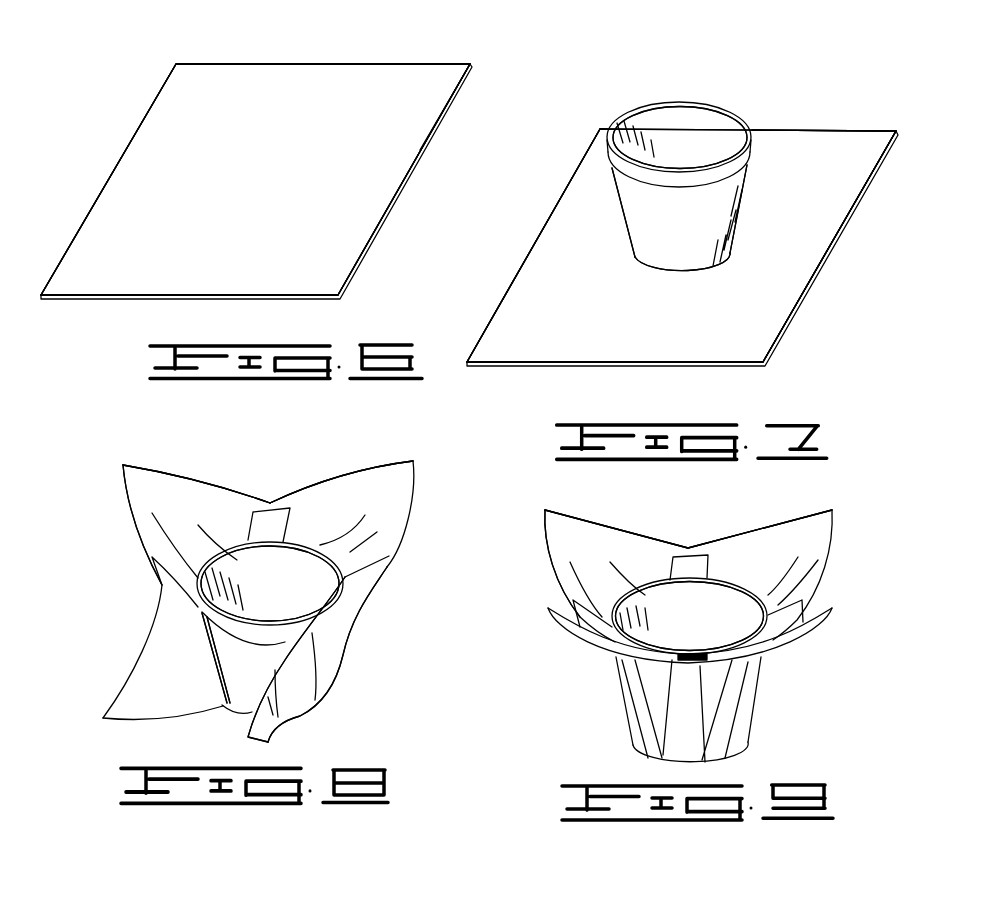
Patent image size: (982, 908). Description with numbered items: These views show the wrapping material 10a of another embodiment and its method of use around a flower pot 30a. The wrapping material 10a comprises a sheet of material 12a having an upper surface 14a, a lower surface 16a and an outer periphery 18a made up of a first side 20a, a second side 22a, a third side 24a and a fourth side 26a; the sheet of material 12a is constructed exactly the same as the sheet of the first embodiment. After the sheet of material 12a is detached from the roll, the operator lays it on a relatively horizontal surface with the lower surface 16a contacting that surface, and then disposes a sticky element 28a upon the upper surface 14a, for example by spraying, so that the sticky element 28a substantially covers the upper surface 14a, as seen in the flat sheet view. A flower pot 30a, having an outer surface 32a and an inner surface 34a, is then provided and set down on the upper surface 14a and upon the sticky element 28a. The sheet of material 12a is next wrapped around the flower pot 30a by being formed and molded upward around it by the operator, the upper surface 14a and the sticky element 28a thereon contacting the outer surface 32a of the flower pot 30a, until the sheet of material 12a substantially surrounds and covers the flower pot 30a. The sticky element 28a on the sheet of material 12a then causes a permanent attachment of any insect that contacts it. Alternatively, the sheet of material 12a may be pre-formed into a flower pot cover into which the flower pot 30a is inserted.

In FIG. 6, the flower pot cover assembly 10a is at (135, 82).
In FIG. 7, the flower pot cover assembly 10a is at (761, 99).
In FIG. 8, the flower pot cover assembly 10a is at (260, 481).
In FIG. 9, the flower pot cover assembly 10a is at (708, 523).
In FIG. 6, the sheet of material 12a is at (325, 62).
In FIG. 7, the sheet of material 12a is at (850, 128).
In FIG. 8, the sheet of material 12a is at (414, 483).
In FIG. 9, the sheet of material 12a is at (798, 513).
In FIG. 6, the upper surface 14a is at (375, 160).
In FIG. 7, the upper surface 14a is at (574, 342).
In FIG. 8, the upper surface 14a is at (158, 485).
In FIG. 9, the upper surface 14a is at (593, 532).
In FIG. 8, the lower surface 16a is at (334, 655).
In FIG. 9, the lower surface 16a is at (723, 703).
In FIG. 6, the first edge of sheet 18a is at (263, 300).
In FIG. 7, the first edge of sheet 18a is at (718, 364).
In FIG. 8, the first edge of sheet 18a is at (123, 492).
In FIG. 9, the first edge of sheet 18a is at (550, 548).
In FIG. 6, the second edge of sheet 20a is at (400, 190).
In FIG. 7, the second edge of sheet 20a is at (792, 309).
In FIG. 6, the third edge of sheet 22a is at (123, 153).
In FIG. 7, the third edge of sheet 22a is at (521, 272).
In FIG. 6, the fourth edge of sheet 24a is at (167, 298).
In FIG. 7, the fourth edge of sheet 24a is at (590, 364).
In FIG. 6, the first corner of sheet 26a is at (245, 63).
In FIG. 7, the first corner of sheet 26a is at (768, 128).
In FIG. 6, the sticky element 28a is at (392, 95).
In FIG. 7, the sticky element 28a is at (722, 317).
In FIG. 8, the sticky element 28a is at (333, 492).
In FIG. 9, the sticky element 28a is at (802, 552).
In FIG. 7, the flower pot 30a is at (708, 210).
In FIG. 8, the flower pot 30a is at (229, 648).
In FIG. 9, the flower pot 30a is at (743, 610).
In FIG. 7, the outer surface 32a is at (697, 236).
In FIG. 8, the outer surface 32a is at (227, 669).
In FIG. 7, the inner surface 34a is at (678, 120).
In FIG. 8, the inner surface 34a is at (243, 566).
In FIG. 9, the inner surface 34a is at (660, 600).